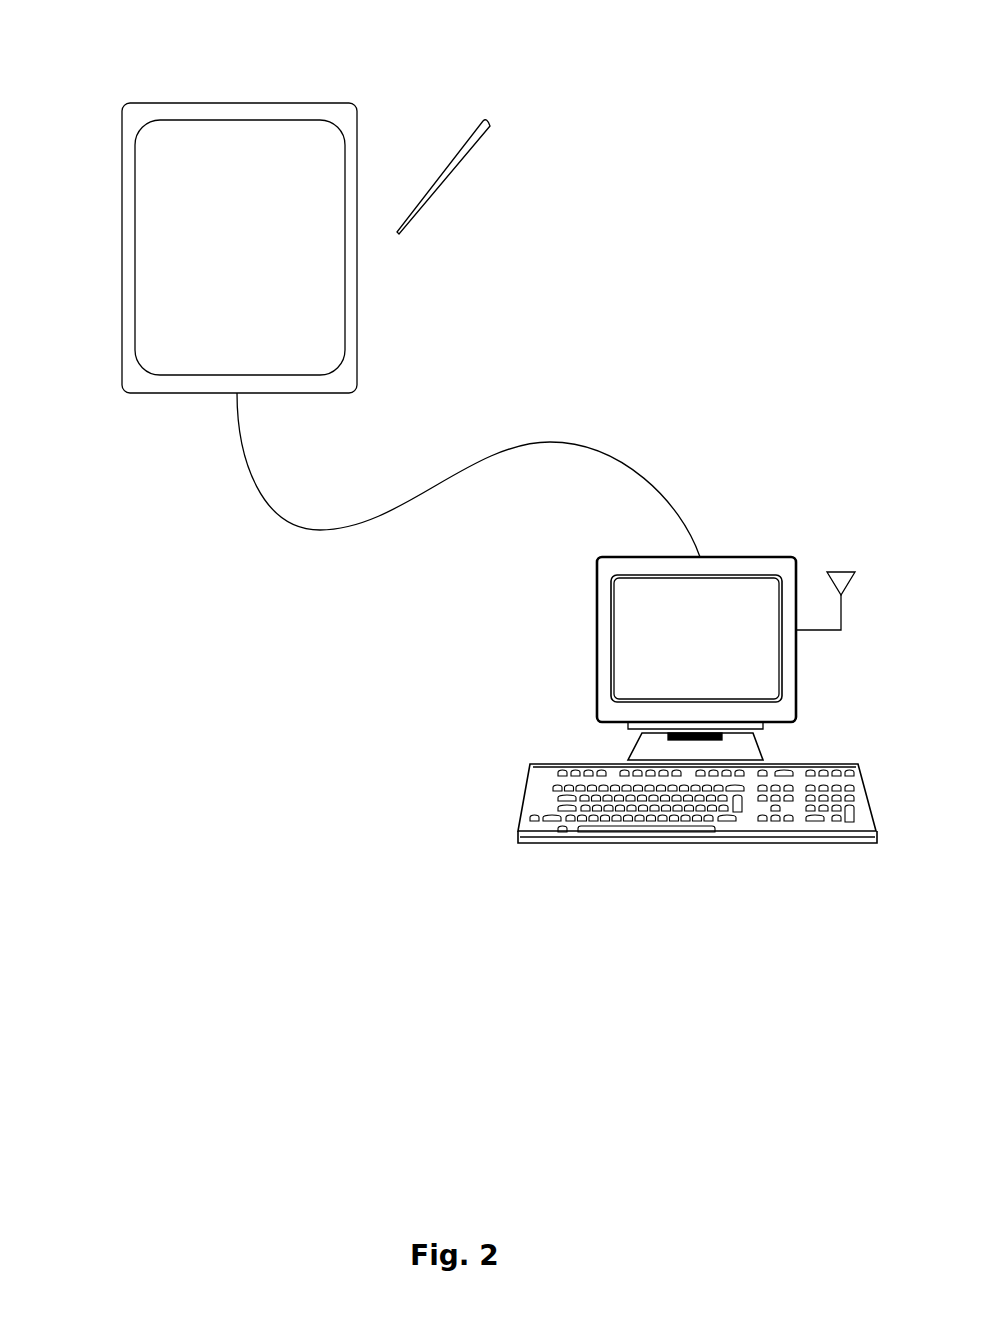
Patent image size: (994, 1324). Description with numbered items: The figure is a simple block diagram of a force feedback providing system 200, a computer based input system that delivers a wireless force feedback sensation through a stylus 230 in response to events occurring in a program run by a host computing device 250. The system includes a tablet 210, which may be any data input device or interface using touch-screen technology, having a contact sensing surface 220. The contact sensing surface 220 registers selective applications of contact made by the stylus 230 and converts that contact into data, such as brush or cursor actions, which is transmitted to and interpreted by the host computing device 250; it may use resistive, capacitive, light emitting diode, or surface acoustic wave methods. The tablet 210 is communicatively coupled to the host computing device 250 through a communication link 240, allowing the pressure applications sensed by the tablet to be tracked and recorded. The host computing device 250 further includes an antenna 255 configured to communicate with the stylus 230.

The force feedback providing system 200 is at (656, 222).
The tablet 210 is at (237, 103).
The contact sensing surface 220 is at (188, 223).
The stylus 230 is at (486, 120).
The communication link 240 is at (530, 447).
The host computing device 250 is at (743, 557).
The antenna 255 is at (818, 633).